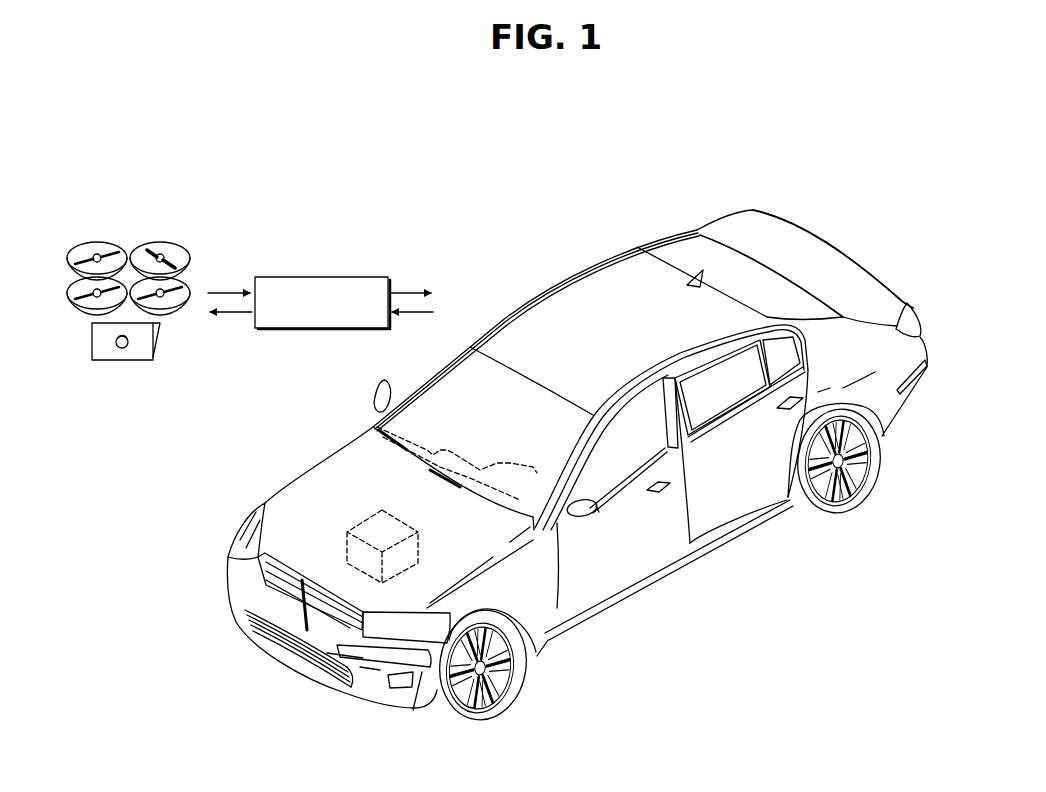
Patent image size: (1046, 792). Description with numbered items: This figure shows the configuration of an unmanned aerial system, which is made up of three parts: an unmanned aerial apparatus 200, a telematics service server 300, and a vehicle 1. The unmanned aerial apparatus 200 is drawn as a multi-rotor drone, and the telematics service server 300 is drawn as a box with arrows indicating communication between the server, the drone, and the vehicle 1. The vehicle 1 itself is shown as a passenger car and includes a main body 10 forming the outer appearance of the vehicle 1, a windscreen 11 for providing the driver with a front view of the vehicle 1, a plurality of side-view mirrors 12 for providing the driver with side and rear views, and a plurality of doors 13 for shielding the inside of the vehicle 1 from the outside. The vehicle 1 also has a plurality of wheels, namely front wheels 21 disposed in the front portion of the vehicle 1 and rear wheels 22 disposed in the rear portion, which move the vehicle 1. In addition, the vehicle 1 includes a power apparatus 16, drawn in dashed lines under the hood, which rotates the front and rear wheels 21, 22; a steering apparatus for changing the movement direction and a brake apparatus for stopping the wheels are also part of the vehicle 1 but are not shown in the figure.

The vehicle 1 is at (485, 171).
The main body 10 is at (755, 184).
The windscreen 11 is at (518, 385).
The side-view mirrors 12 is at (376, 387).
The doors 13 is at (667, 527).
The power apparatus 16 is at (362, 523).
The front wheels 21 is at (505, 668).
The rear wheels 22 is at (857, 467).
The unmanned aerial apparatus 200 is at (159, 233).
The telematics service server 300 is at (355, 277).